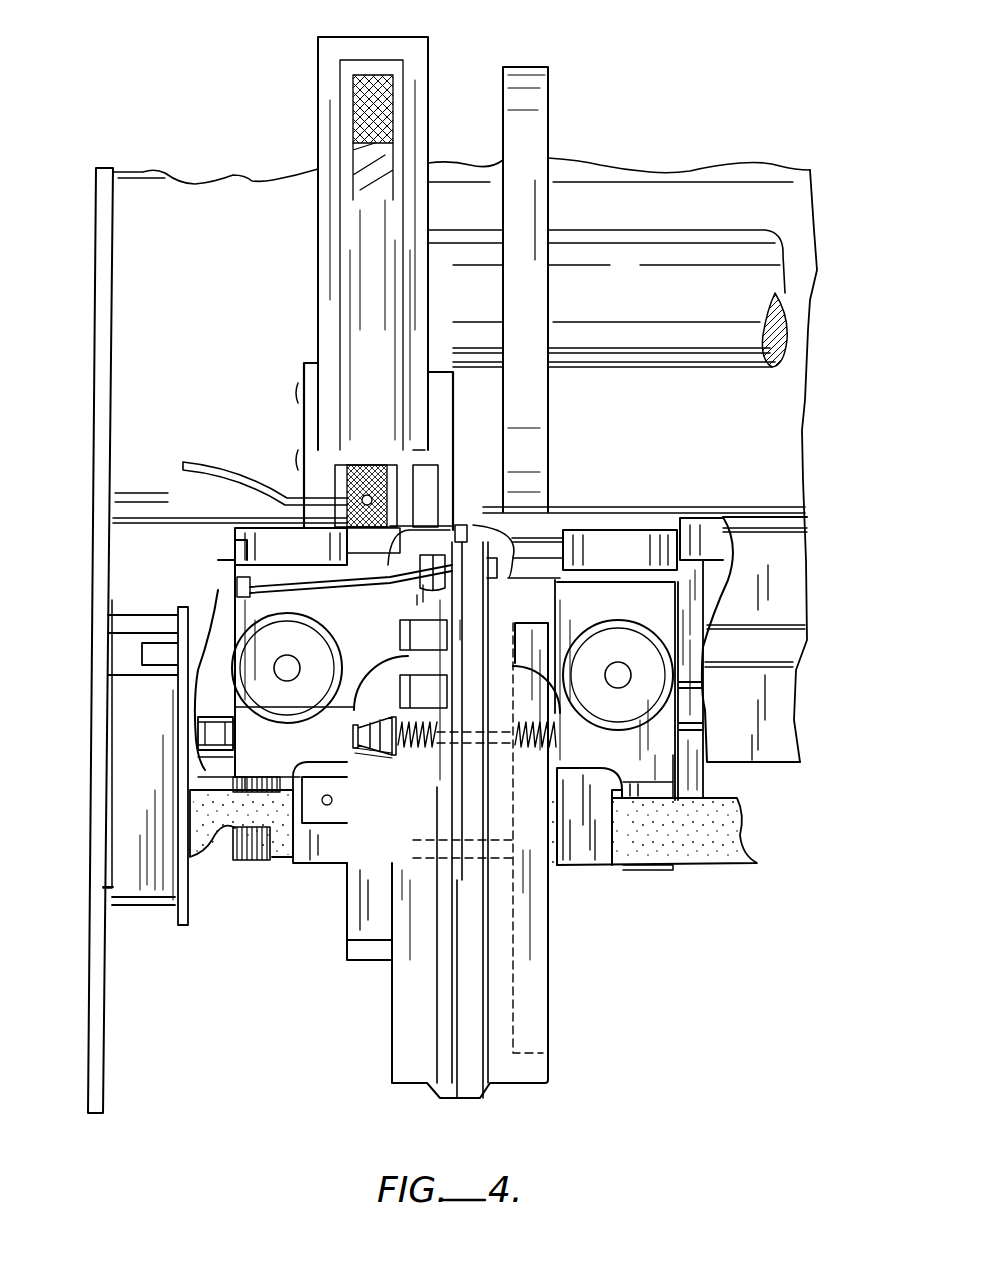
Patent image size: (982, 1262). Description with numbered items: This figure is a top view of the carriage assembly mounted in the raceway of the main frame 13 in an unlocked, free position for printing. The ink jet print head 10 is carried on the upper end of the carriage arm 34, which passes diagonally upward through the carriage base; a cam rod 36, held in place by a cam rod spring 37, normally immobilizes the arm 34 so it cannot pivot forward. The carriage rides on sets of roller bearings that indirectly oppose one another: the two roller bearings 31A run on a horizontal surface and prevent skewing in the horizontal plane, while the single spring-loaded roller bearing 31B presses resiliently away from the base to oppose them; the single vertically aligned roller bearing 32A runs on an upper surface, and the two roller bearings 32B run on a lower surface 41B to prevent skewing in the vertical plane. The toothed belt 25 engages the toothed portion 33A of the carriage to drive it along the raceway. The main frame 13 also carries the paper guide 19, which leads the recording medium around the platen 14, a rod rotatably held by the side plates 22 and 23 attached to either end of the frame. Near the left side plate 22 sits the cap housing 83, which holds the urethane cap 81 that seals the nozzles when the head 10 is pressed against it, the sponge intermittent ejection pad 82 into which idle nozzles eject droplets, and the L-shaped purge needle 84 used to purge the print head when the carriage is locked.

The ink jet print head 10 is at (550, 1023).
The main frame 13 is at (808, 568).
The platen 14 is at (550, 103).
The paper guide 19 is at (783, 415).
The side plate 22 is at (93, 325).
The side plate 23 is at (580, 866).
The belt 25 is at (707, 853).
The roller bearings 31A is at (318, 650).
The roller bearing 31B is at (495, 535).
The roller bearing 32A is at (405, 660).
The roller bearings 32B is at (258, 535).
The toothed portion 33A is at (255, 862).
The carriage arm 34 is at (358, 912).
The cam rod 36 is at (213, 752).
The cam rod spring 37 is at (545, 752).
The surface 41B is at (697, 550).
The cap 81 is at (347, 473).
The intermittent ejection pad 82 is at (430, 488).
The cap housing 83 is at (412, 42).
The purge needle 84 is at (365, 468).